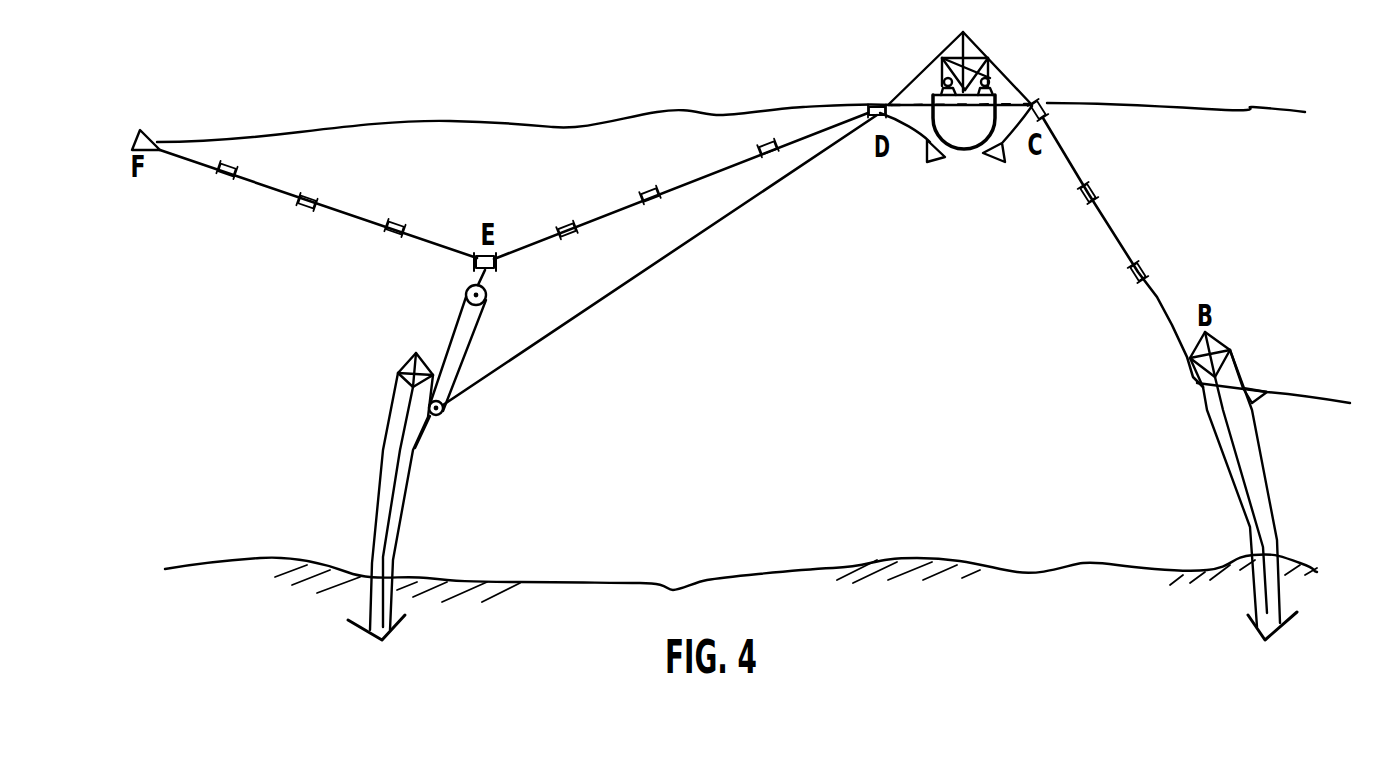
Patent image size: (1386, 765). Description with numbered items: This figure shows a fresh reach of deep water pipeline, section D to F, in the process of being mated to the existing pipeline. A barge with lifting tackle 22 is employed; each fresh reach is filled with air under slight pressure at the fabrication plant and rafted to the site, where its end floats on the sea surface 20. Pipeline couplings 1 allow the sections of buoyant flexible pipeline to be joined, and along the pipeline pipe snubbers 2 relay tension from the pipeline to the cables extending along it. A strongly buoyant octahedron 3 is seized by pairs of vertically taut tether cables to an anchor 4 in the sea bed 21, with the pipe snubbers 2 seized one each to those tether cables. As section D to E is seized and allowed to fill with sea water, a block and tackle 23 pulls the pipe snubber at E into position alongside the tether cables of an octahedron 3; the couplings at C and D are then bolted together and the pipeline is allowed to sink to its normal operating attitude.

The pipeline coupling 1 is at (143, 130).
The pipe snubber 2 is at (240, 167).
The buoyant octahedron 3 is at (402, 362).
The anchor 4 is at (412, 624).
The sea surface 20 is at (733, 115).
The sea bed 21 is at (670, 587).
The barge with lifting tackle 22 is at (1036, 67).
The block and tackle 23 is at (452, 329).